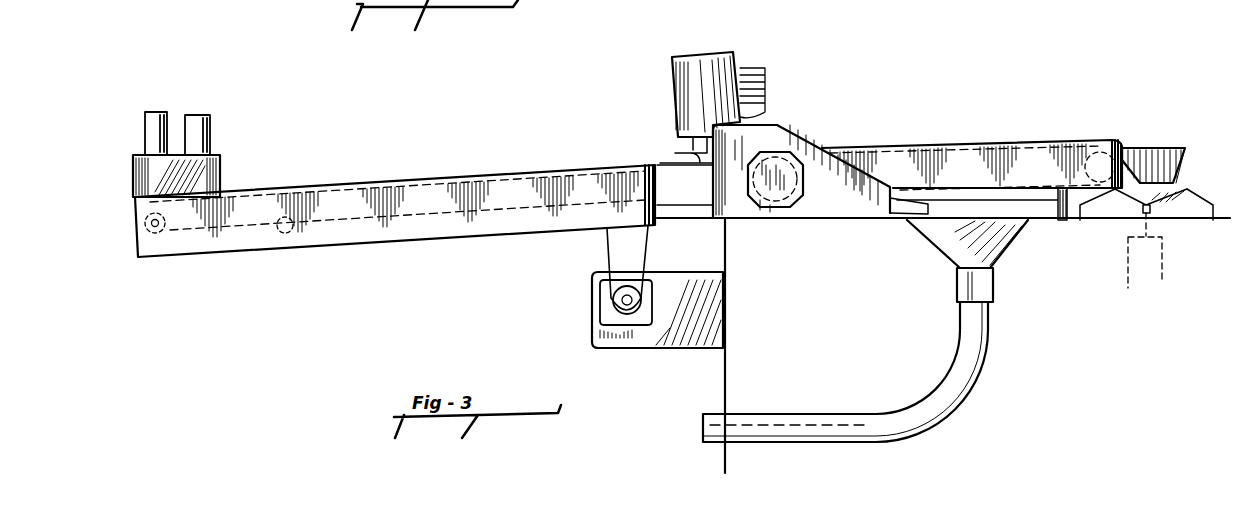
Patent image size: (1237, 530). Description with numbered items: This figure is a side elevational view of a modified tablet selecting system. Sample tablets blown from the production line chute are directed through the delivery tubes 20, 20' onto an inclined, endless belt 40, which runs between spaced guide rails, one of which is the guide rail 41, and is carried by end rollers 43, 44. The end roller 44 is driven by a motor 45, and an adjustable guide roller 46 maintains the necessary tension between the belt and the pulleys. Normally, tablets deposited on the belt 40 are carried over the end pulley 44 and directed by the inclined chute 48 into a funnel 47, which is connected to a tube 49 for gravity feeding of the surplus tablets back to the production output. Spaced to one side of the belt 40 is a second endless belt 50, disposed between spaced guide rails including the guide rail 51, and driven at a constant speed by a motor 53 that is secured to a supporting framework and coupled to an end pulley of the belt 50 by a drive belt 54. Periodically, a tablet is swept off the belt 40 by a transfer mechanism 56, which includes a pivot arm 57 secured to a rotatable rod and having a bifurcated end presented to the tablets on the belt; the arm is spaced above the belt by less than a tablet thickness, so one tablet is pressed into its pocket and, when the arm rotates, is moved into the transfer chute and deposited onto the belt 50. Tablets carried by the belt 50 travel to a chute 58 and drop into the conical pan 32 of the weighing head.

The delivery tube 20 is at (142, 112).
The delivery tube 20' is at (213, 111).
The conical pan 32 is at (1150, 185).
The inclined endless belt 40 is at (228, 226).
The guide rail 41 is at (357, 236).
The end roller 43 is at (156, 230).
The end roller 44 is at (789, 159).
The motor 45 is at (793, 203).
The adjustable guide roller 46 is at (288, 234).
The funnel 47 is at (1013, 237).
The inclined chute 48 is at (912, 213).
The tube 49 is at (955, 352).
The second endless belt 50 is at (917, 154).
The guide rail 51 is at (1035, 143).
The motor 53 is at (600, 297).
The drive belt 54 is at (602, 243).
The transfer mechanism 56 is at (690, 56).
The pivot arm 57 is at (667, 162).
The chute 58 is at (1164, 153).